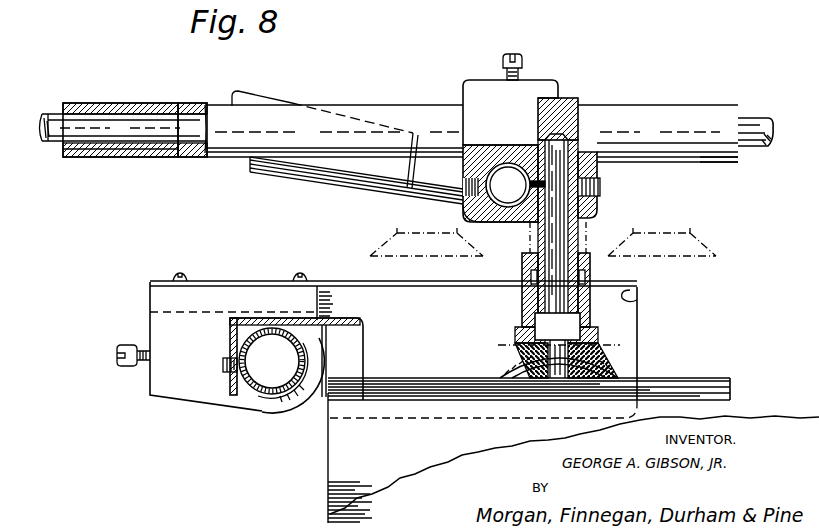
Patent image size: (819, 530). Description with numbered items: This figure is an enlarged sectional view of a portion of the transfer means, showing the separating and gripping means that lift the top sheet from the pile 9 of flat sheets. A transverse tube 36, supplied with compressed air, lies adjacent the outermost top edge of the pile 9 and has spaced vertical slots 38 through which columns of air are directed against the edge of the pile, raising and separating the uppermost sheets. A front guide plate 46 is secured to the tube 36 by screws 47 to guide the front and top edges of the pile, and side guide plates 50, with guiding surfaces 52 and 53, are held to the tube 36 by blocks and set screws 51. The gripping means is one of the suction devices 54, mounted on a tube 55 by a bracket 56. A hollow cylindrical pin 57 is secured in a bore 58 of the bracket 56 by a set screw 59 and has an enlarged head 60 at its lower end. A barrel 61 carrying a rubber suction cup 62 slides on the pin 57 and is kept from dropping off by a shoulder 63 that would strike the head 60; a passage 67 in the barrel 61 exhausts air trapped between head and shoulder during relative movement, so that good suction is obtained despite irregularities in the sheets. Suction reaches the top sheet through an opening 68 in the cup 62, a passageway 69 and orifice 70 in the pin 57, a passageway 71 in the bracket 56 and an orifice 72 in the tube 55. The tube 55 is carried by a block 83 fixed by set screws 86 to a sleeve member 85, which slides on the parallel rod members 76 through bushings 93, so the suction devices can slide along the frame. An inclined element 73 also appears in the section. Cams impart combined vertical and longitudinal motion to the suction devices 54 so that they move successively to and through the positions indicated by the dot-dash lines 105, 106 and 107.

The pile 9 is at (711, 386).
The transverse tube 36 is at (257, 396).
The vertical slots 38 is at (303, 396).
The front guide plate 46 is at (230, 331).
The screws 47 is at (222, 364).
The side guide plates 50 is at (176, 400).
The set screws 51 is at (120, 363).
The surface 52 is at (403, 306).
The surface 53 is at (634, 296).
The suction devices 54 is at (586, 93).
The tube 55 is at (512, 220).
The bracket 56 is at (467, 209).
The hollow cylindrical pin 57 is at (580, 113).
The bore 58 is at (597, 206).
The set screw 59 is at (601, 187).
The enlarged head 60 is at (591, 300).
The barrel 61 is at (582, 328).
The rubber suction cup 62 is at (603, 368).
The shoulder 63 is at (586, 276).
The passage 67 is at (530, 276).
The opening 68 is at (548, 345).
The passageway 69 is at (566, 250).
The orifice 70 is at (548, 190).
The passageway 71 is at (532, 178).
The orifice 72 is at (526, 190).
The tilted sleeve 73 is at (356, 174).
The rod members 76 is at (121, 131).
The block 83 is at (472, 90).
The sleeve member 85 is at (190, 104).
The set screws 86 is at (524, 62).
The bushings 93 is at (103, 112).
The dot-dash lines 105 is at (508, 348).
The dot-dash lines 106 is at (385, 250).
The dot-dash lines 107 is at (718, 244).